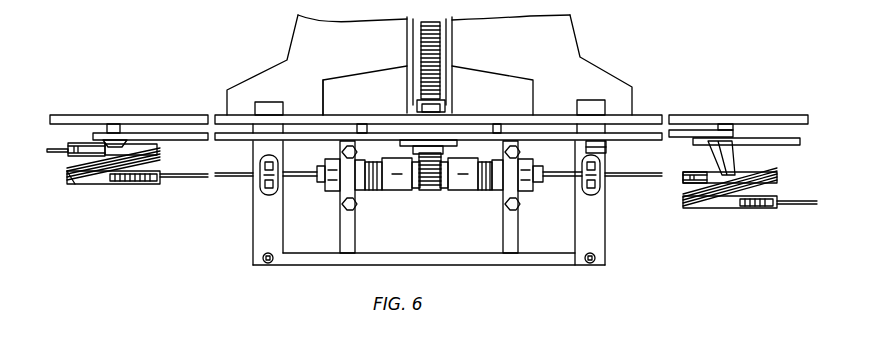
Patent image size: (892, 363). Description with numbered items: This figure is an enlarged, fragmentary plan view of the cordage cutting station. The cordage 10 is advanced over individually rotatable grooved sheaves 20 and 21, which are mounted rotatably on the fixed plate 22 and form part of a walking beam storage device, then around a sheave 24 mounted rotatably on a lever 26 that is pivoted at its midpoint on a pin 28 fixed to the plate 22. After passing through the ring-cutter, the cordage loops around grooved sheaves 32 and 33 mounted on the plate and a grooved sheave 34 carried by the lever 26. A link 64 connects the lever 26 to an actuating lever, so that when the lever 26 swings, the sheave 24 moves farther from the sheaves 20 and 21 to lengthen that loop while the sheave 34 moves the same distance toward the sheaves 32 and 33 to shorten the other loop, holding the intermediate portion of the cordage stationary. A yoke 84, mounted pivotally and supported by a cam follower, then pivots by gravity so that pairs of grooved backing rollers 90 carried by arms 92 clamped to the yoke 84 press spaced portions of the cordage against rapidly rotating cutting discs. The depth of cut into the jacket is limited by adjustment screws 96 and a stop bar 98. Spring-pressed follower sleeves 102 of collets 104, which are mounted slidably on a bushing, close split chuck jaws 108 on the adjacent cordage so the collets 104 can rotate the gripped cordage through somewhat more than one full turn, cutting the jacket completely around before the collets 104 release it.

The cordage 10 is at (180, 178).
The grooved sheave 20 is at (80, 147).
The grooved sheave 21 is at (123, 185).
The fixed plate 22 is at (143, 118).
The sheave 24 is at (82, 185).
The lever 26 is at (322, 135).
The pin 28 is at (436, 147).
The grooved sheave 32 is at (745, 178).
The grooved sheave 33 is at (768, 208).
The grooved sheave 34 is at (697, 208).
The link 64 is at (628, 143).
The yoke 84 is at (273, 68).
The grooved backing roller 90 is at (263, 184).
The arm 92 is at (257, 230).
The adjustment screw 96 is at (267, 265).
The stop bar 98 is at (497, 258).
The follower sleeve 102 is at (387, 190).
The collet 104 is at (328, 206).
The split chuck jaw 108 is at (318, 182).